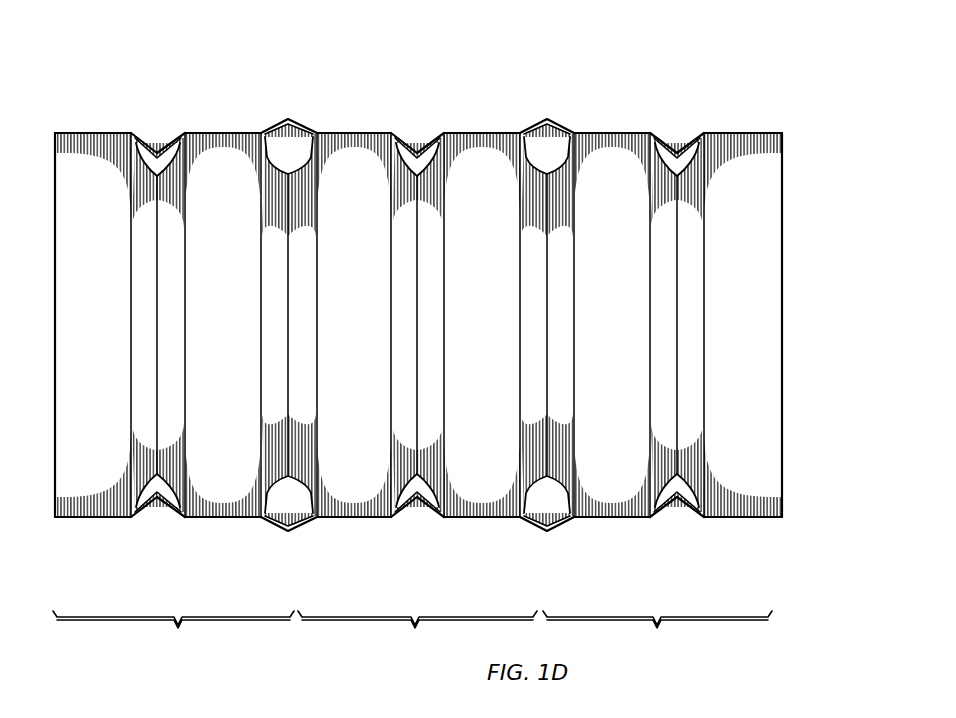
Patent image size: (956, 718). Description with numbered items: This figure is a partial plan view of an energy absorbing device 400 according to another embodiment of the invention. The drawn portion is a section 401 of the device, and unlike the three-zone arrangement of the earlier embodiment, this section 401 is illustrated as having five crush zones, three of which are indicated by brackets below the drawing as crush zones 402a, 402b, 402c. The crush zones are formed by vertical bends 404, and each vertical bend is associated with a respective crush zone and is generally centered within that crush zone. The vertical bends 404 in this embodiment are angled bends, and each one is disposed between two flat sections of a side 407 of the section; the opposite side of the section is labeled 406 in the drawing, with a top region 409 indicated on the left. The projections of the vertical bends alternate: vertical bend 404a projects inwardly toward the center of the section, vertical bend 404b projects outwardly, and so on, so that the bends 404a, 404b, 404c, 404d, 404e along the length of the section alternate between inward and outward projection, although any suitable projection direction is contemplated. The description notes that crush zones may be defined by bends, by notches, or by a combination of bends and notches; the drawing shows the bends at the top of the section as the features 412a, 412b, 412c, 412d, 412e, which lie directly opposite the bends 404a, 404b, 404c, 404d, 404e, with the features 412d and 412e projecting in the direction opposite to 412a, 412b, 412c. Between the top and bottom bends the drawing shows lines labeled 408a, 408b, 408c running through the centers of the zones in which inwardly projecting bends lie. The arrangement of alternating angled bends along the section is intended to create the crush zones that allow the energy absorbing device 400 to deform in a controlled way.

The energy absorbing device 400 is at (207, 75).
The section 401 is at (787, 216).
The crush zone 402a is at (185, 393).
The crush zone 402b is at (436, 393).
The crush zone 402c is at (657, 632).
The vertical bend 404 is at (742, 571).
The vertical bend 404a is at (157, 520).
The vertical bend 404b is at (417, 520).
The vertical bend 404c is at (677, 520).
The vertical bend 404d is at (288, 536).
The vertical bend 404e is at (547, 536).
The bottom edge 406 is at (88, 518).
The side 407 is at (90, 131).
The channel 408a is at (158, 300).
The channel 408b is at (417, 300).
The channel 408c is at (677, 300).
The body region 409 is at (113, 340).
The top V groove 412a is at (170, 140).
The top V groove 412b is at (406, 138).
The top V groove 412c is at (666, 140).
The top protrusion 412d is at (280, 125).
The top protrusion 412e is at (558, 140).